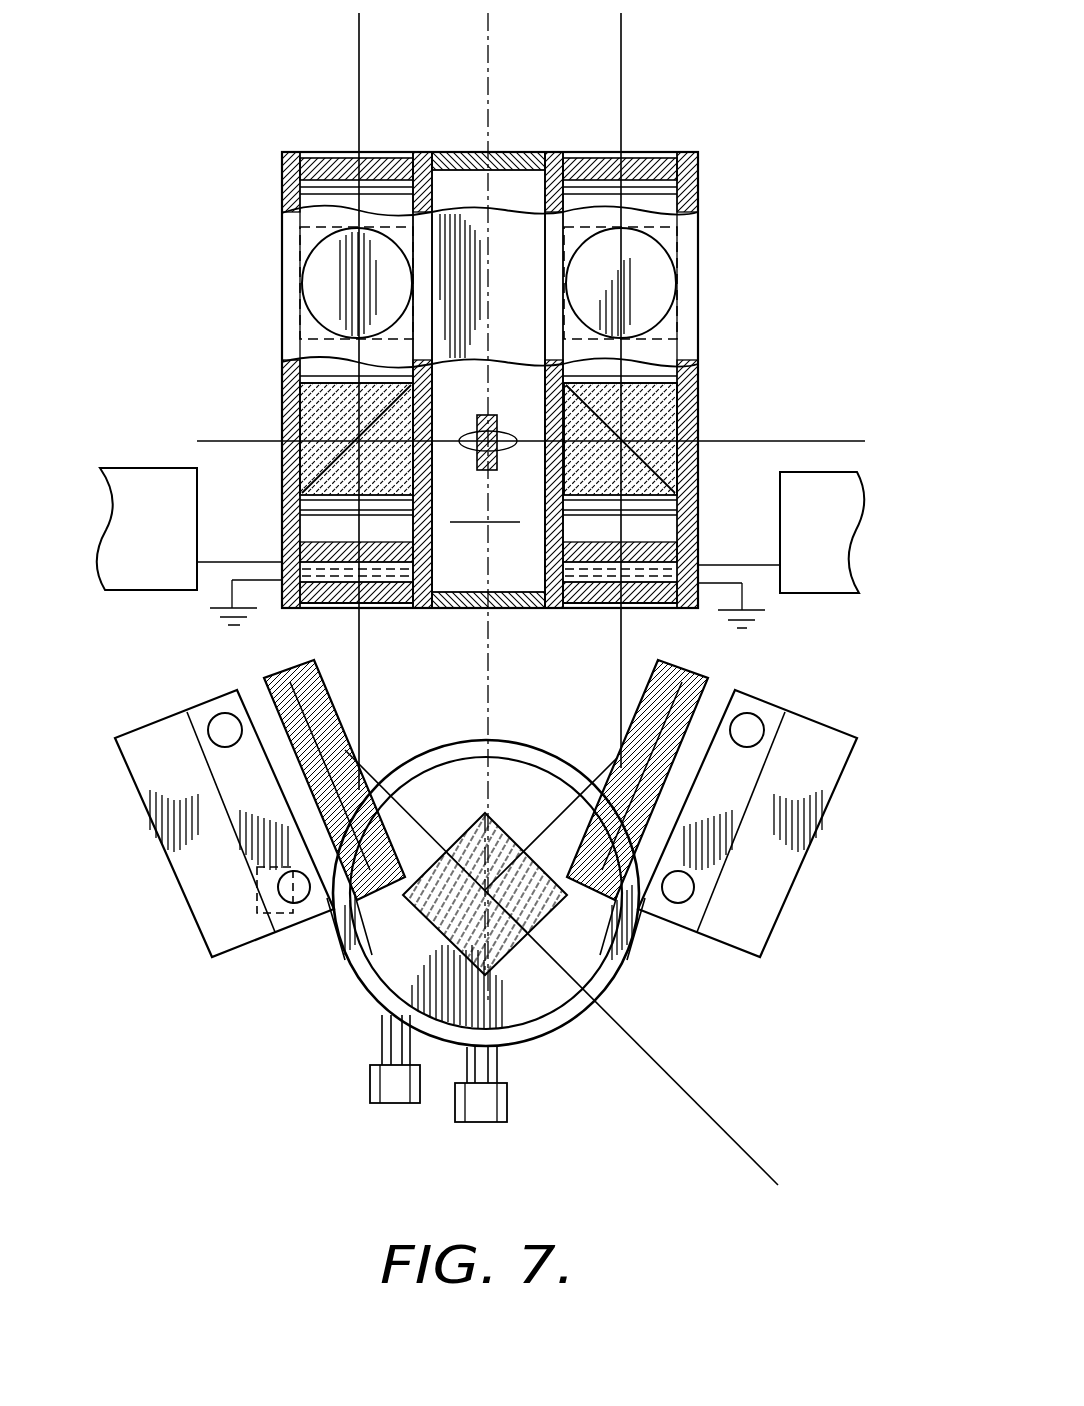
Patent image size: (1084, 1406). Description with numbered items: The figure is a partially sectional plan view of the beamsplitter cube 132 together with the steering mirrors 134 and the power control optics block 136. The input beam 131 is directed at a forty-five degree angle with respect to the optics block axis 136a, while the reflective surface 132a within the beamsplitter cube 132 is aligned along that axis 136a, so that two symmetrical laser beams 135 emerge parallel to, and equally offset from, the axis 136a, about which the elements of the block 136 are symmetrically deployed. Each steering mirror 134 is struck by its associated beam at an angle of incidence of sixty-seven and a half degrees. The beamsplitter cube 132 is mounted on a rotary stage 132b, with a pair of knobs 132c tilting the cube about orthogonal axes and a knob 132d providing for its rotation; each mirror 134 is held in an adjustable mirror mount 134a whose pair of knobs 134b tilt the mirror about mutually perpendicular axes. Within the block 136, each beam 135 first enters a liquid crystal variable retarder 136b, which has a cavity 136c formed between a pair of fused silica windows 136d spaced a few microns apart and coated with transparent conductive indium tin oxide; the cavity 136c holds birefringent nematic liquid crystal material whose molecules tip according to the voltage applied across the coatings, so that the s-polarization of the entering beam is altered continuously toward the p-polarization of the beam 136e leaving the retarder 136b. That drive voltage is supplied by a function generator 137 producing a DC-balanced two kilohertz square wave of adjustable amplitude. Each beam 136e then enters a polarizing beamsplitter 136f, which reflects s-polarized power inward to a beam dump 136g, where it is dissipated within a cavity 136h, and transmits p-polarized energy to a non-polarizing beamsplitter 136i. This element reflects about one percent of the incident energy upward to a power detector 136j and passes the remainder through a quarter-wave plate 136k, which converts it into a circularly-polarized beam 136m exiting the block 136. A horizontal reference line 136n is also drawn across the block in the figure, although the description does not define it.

The input beam 131 is at (695, 1105).
The beamsplitter cube 132 is at (450, 925).
The reflective surface 132a is at (505, 947).
The rotary stage 132b is at (622, 982).
The knobs 132c is at (370, 1085).
The knob 132d is at (257, 910).
The steering mirrors 134 is at (345, 708).
The adjustable mirror mount 134a is at (200, 692).
The knobs 134b is at (222, 746).
The laser beams 135 is at (378, 656).
The power control optics block 136 is at (278, 206).
The axis 136a is at (486, 98).
The liquid crystal variable retarder 136b is at (655, 616).
The cavity 136c is at (452, 568).
The fused silica windows 136d is at (338, 535).
The beam 136e is at (698, 510).
The polarizing beamsplitter 136f is at (336, 380).
The beam dump 136g is at (500, 432).
The cavity 136h is at (487, 500).
The non-polarizing beamsplitter 136i is at (300, 326).
The power detector 136j is at (303, 250).
The quarter-wave plate 136k is at (332, 162).
The circularly-polarized beam 136m is at (357, 104).
The reference line 136n is at (728, 440).
The function generator 137 is at (165, 468).